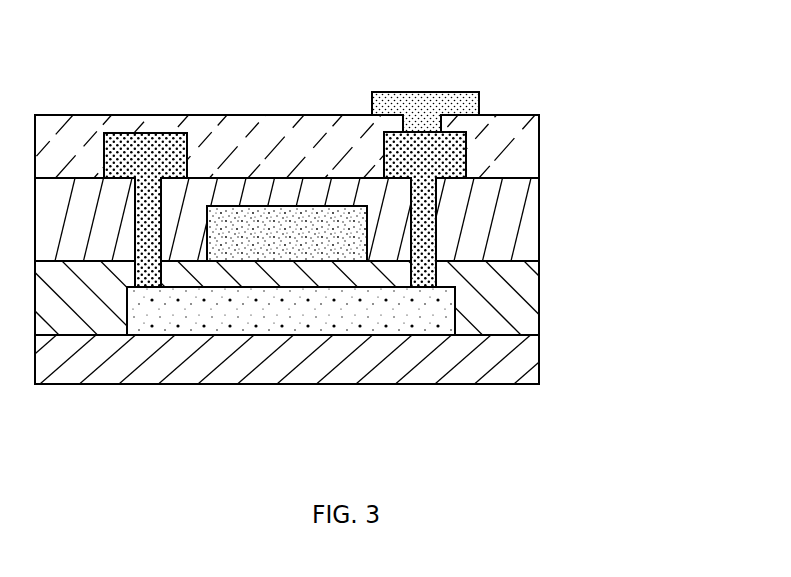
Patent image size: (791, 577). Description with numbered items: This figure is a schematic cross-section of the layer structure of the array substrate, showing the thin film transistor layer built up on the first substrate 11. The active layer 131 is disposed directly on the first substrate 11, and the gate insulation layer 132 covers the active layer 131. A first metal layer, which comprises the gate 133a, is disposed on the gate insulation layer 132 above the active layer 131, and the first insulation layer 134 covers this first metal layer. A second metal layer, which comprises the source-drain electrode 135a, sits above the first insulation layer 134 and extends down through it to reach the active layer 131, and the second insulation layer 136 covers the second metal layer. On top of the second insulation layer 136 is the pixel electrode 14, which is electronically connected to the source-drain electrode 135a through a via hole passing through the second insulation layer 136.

The first substrate 11 is at (515, 353).
The gate insulation layer 132 is at (513, 308).
The first insulation layer 134 is at (508, 218).
The second insulation layer 136 is at (523, 142).
The active layer 131 is at (280, 315).
The gate 133a is at (327, 233).
The source-drain electrode 135a is at (405, 158).
The pixel electrode 14 is at (458, 102).